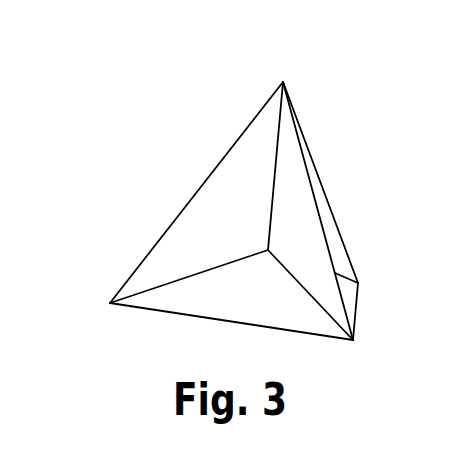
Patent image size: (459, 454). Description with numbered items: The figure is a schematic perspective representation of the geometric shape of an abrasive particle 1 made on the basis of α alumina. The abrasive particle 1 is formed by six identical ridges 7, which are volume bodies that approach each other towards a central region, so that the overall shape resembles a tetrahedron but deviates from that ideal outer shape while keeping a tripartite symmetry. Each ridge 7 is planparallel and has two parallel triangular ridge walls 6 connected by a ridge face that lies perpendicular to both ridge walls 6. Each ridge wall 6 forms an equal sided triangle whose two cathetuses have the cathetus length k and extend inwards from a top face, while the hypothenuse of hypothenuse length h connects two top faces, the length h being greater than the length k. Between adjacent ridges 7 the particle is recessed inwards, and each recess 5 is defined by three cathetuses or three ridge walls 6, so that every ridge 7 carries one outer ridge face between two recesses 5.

The abrasive particle 1 is at (305, 138).
The hypothenuse length h is at (190, 200).
The cathetus length k is at (278, 140).
The recess 5 is at (248, 272).
The ridge wall 6 is at (317, 267).
The ridge 7 is at (329, 252).